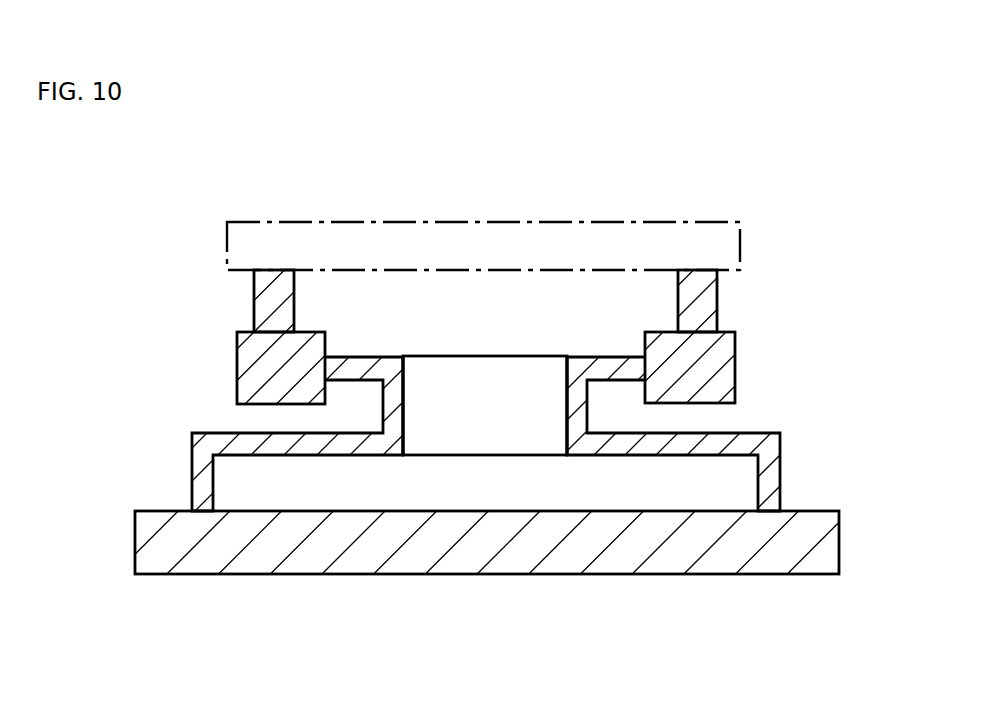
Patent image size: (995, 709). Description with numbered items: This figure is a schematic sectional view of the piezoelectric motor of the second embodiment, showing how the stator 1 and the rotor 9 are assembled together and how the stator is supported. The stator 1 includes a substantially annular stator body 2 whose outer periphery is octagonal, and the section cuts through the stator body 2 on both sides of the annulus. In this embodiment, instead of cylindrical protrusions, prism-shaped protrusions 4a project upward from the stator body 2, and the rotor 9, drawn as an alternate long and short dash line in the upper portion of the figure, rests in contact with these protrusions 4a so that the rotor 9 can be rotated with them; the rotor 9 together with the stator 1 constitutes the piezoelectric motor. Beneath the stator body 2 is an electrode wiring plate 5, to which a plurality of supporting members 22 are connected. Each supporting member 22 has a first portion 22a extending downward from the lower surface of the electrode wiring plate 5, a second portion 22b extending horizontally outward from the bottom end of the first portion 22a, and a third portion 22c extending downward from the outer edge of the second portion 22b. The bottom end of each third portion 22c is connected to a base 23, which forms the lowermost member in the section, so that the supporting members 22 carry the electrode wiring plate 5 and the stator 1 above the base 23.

The stator 1 is at (741, 344).
The stator body 2 is at (311, 330).
The prism-shaped protrusion 4a is at (254, 303).
The electrode wiring plate 5 is at (378, 357).
The rotor 9 is at (453, 221).
The supporting member 22 is at (483, 469).
The first portion 22a is at (402, 418).
The second portion 22b is at (483, 500).
The third portion 22c is at (192, 470).
The base 23 is at (370, 558).